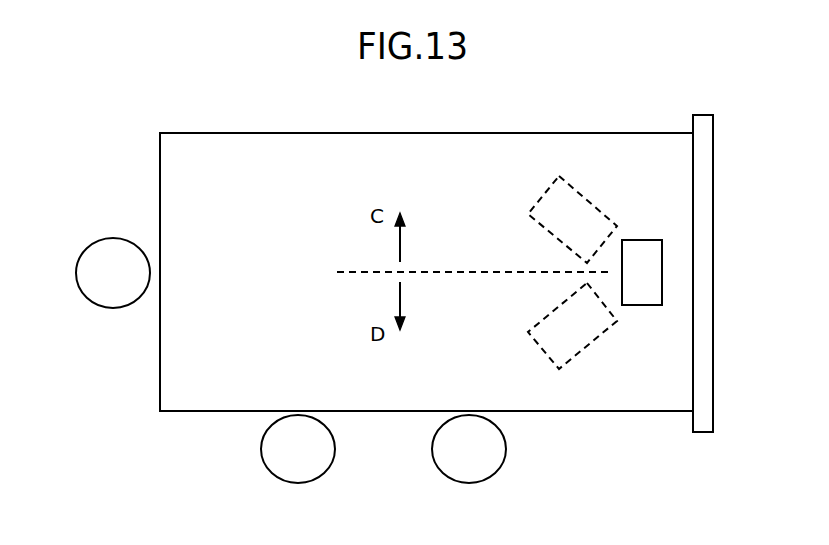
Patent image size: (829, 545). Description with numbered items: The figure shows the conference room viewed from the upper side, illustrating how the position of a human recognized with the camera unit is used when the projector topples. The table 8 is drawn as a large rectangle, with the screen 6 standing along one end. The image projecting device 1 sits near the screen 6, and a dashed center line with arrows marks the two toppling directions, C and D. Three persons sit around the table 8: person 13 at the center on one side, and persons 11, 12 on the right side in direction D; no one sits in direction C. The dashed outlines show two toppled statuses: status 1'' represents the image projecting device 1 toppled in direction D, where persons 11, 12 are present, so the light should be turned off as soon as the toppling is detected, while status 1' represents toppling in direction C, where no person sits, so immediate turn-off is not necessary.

The table 8 is at (218, 133).
The screen 6 is at (713, 175).
The image projecting device 1 is at (642, 248).
The image projecting device toppled in direction C 1' is at (572, 207).
The image projecting device toppled in direction D 1'' is at (572, 340).
The person 13 is at (90, 290).
The person 12 is at (273, 465).
The person 11 is at (447, 465).